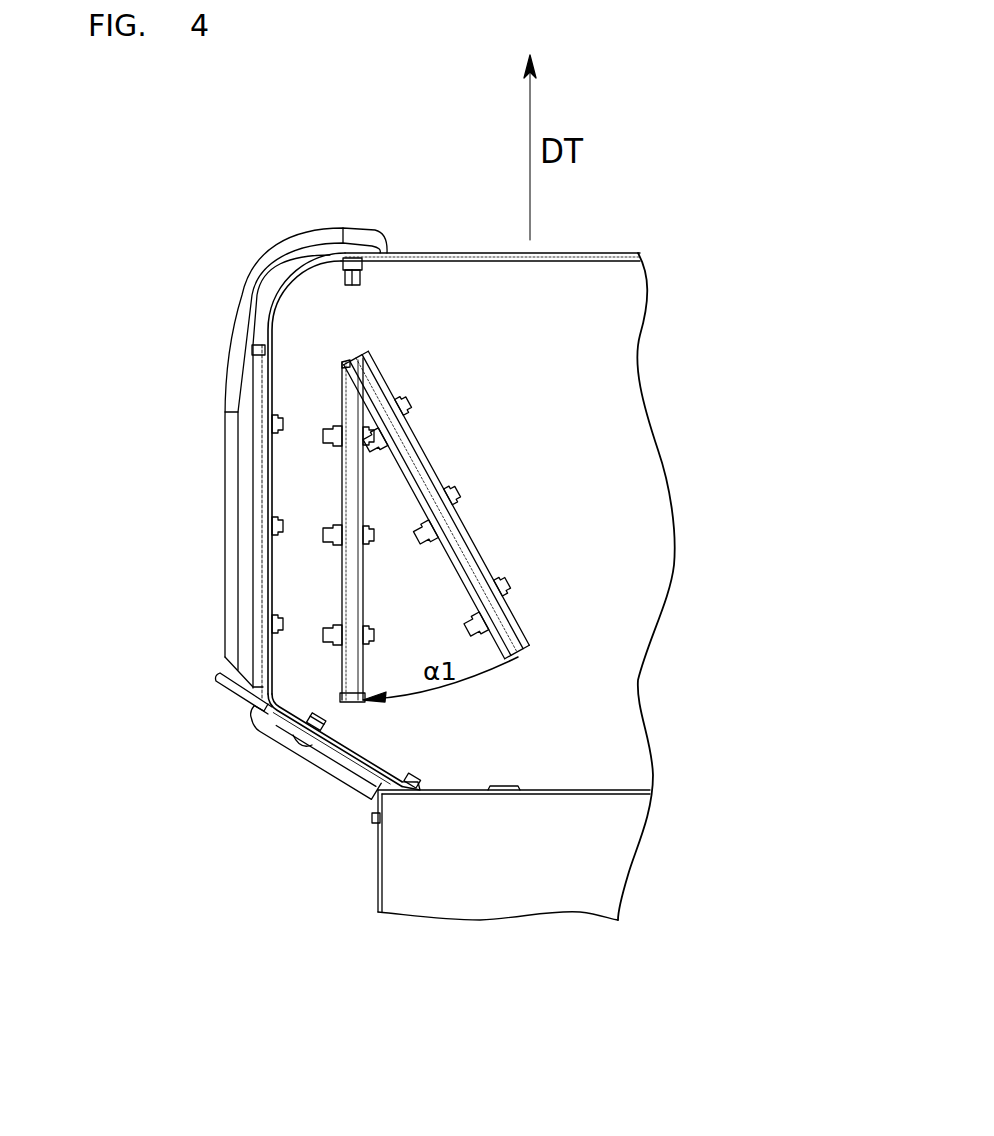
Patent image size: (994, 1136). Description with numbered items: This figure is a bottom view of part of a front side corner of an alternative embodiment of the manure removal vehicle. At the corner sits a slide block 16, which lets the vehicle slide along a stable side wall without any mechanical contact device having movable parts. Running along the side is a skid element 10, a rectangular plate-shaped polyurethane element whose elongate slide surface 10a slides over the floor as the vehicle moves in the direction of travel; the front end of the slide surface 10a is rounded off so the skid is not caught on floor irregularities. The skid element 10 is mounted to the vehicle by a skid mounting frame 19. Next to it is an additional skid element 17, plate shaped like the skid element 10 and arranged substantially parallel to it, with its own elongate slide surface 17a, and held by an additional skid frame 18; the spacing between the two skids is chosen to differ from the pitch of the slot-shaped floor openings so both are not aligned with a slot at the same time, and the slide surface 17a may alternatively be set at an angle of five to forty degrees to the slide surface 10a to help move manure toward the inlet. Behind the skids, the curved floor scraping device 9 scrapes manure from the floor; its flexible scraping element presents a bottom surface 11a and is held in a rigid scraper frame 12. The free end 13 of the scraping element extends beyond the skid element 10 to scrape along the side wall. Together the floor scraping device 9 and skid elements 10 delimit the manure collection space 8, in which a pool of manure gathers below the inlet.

The manure collection space 8 is at (598, 680).
The floor scraping device 9 is at (320, 756).
The skid element 10 is at (244, 495).
The slide surface 10a is at (260, 573).
The bottom surface 11a is at (345, 758).
The scraper frame 12 is at (368, 762).
The free end 13 is at (228, 683).
The slide block 16 is at (255, 300).
The additional skid element 17 is at (352, 423).
The elongate slide surface 17a is at (357, 592).
The additional skid frame 18 is at (363, 496).
The skid mounting frame 19 is at (268, 547).